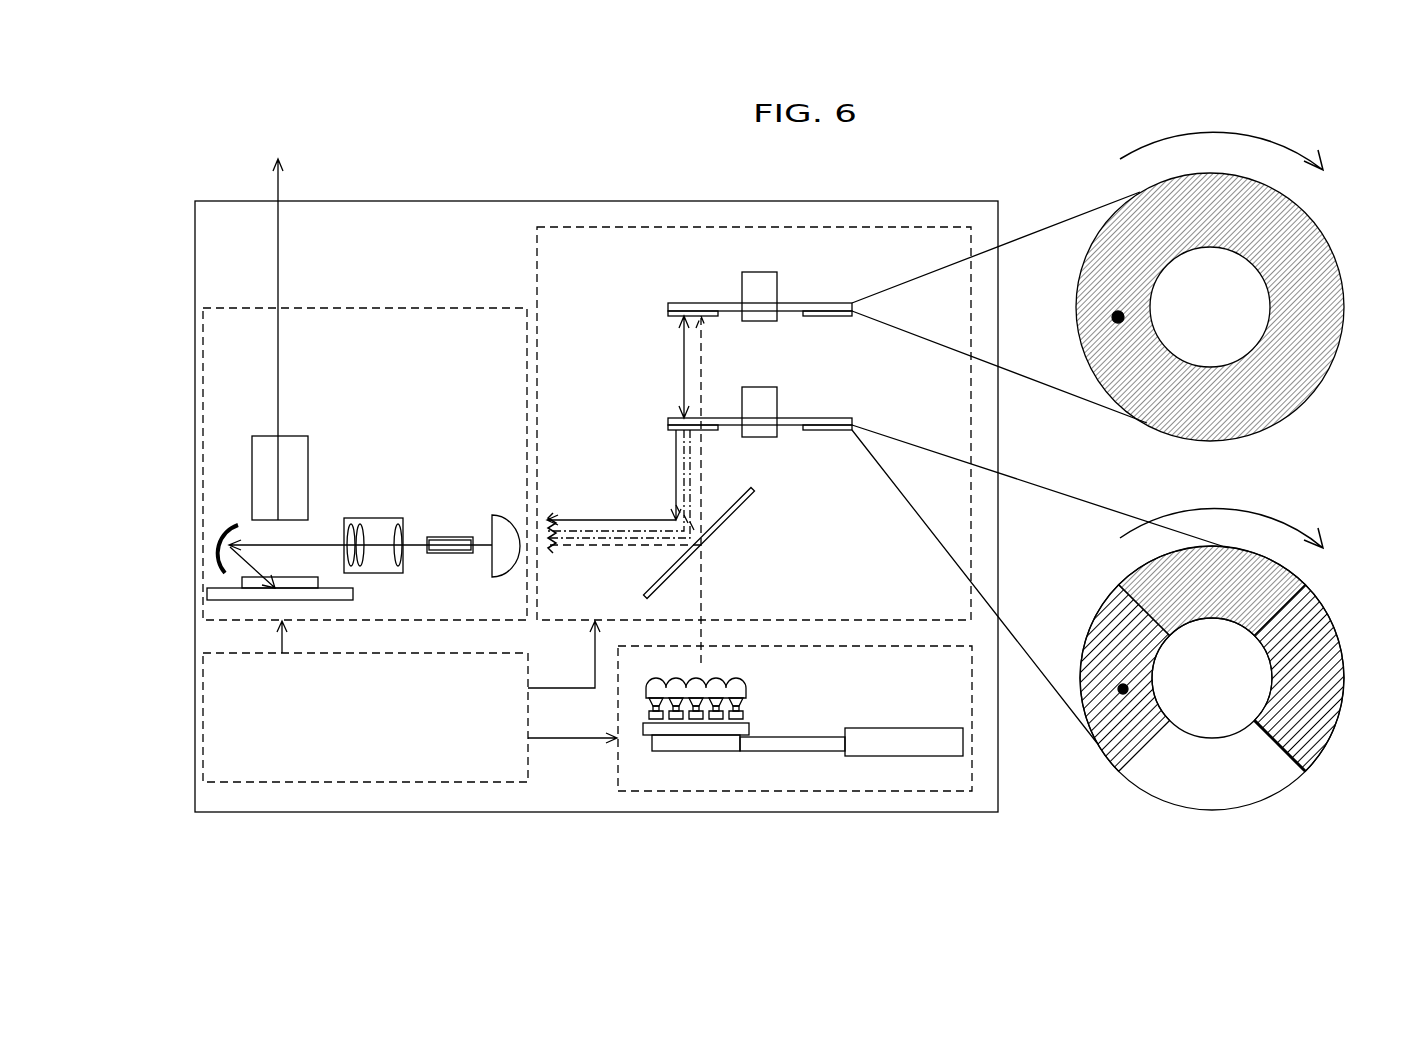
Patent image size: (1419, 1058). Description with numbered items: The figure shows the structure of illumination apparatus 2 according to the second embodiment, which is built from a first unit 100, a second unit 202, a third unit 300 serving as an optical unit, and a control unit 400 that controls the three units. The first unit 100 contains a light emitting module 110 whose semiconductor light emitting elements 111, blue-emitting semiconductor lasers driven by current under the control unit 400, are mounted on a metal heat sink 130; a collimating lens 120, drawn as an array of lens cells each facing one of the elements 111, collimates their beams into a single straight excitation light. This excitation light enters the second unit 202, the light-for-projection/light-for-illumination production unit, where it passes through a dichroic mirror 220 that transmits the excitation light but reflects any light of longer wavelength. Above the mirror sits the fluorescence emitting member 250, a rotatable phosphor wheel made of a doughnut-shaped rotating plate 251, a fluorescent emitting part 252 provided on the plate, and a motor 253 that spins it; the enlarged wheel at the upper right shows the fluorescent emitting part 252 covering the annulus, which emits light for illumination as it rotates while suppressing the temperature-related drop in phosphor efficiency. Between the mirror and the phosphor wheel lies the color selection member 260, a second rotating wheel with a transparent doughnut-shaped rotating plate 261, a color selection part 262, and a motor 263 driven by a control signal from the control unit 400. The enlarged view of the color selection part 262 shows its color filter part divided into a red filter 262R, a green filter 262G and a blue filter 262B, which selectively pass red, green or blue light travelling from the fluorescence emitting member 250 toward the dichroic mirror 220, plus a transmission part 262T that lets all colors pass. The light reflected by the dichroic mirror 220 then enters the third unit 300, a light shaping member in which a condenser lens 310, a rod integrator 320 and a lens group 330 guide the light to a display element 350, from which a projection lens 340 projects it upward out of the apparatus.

The illumination apparatus 2 is at (915, 200).
The first unit 100 is at (972, 762).
The light emitting module 110 is at (745, 708).
The semiconductor light emitting elements 111 is at (745, 717).
The collimating lens 120 is at (740, 681).
The heat sink 130 is at (649, 735).
The second unit 202 is at (757, 227).
The dichroic mirror 220 is at (713, 533).
The fluorescence emitting member 250 is at (991, 286).
The rotating plate 251 is at (790, 301).
The fluorescent emitting part 252 is at (668, 313).
The motor 253 is at (760, 268).
The color selection member 260 is at (995, 596).
The rotating plate 261 is at (790, 416).
The color selection part 262 is at (668, 430).
The red filter 262R is at (1265, 583).
The green filter 262G is at (1113, 608).
The blue filter 262B is at (1312, 752).
The transmission part 262T is at (1207, 797).
The motor 263 is at (760, 386).
The third unit 300 is at (203, 396).
The condenser lens 310 is at (495, 515).
The rod integrator 320 is at (447, 537).
The lens group 330 is at (372, 518).
The projection lens 340 is at (297, 436).
The display element 350 is at (222, 577).
The control unit 400 is at (203, 718).